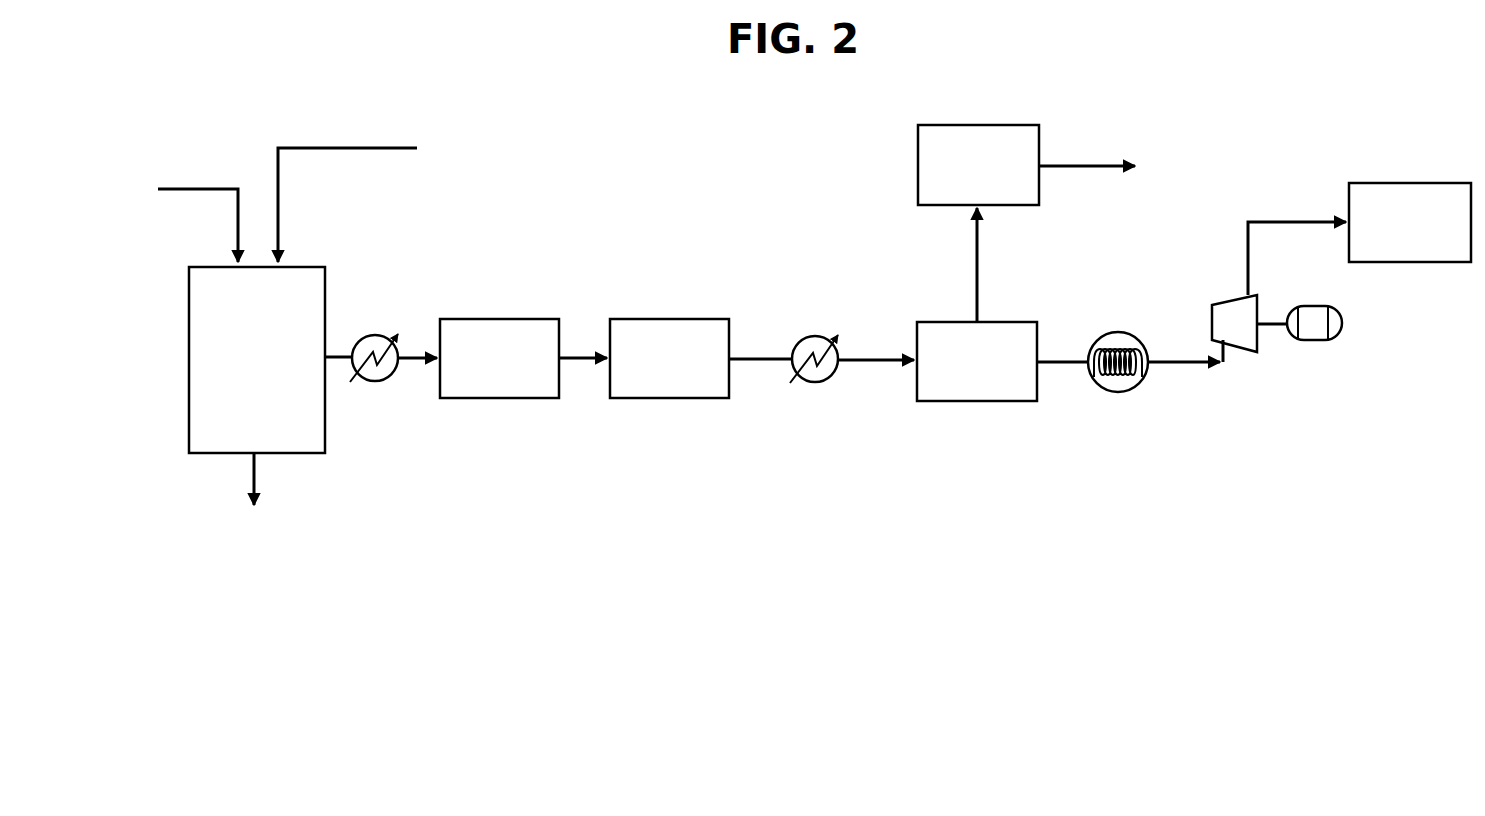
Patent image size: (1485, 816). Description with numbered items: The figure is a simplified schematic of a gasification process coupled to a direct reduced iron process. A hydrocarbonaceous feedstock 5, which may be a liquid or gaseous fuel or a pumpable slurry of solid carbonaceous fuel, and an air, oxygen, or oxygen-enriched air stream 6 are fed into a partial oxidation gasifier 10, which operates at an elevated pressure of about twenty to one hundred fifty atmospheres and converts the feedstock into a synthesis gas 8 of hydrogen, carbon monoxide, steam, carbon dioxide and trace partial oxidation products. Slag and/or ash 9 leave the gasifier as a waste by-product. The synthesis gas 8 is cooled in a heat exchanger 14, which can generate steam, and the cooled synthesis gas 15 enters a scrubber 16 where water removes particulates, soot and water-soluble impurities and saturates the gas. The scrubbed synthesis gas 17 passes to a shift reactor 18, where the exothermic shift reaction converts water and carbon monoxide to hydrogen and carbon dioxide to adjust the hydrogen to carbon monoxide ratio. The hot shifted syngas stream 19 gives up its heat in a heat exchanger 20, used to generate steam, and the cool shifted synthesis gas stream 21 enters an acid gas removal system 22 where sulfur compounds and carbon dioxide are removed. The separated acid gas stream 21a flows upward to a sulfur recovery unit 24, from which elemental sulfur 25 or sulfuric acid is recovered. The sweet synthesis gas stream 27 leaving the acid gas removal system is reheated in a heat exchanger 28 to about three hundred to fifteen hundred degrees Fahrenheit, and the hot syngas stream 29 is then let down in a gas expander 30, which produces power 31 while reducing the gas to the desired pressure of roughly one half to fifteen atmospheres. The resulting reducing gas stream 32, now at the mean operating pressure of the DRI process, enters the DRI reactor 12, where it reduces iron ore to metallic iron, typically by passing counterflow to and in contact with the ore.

The hydrocarbonaceous feedstock 5 is at (190, 188).
The oxygen-enriched air stream 6 is at (341, 148).
The synthesis gas 8 is at (335, 348).
The slag and/or ash 9 is at (256, 470).
The partial oxidation gasifier 10 is at (188, 343).
The DRI reactor 12 is at (1413, 257).
The heat exchanger 14 is at (368, 384).
The cooled synthesis gas 15 is at (417, 362).
The scrubber 16 is at (525, 327).
The scrubbed synthesis gas 17 is at (577, 365).
The shift reactor 18 is at (678, 394).
The shifted syngas stream 19 is at (758, 363).
The heat exchanger 20 is at (830, 382).
The cool shifted synthesis gas stream 21 is at (875, 367).
The acid gas stream 21a is at (980, 265).
The acid gas removal system 22 is at (975, 396).
The sulfur recovery unit 24 is at (988, 132).
The elemental sulfur 25 is at (1107, 167).
The sweet synthesis gas stream 27 is at (1066, 364).
The heat exchanger 28 is at (1118, 333).
The hot syngas stream 29 is at (1180, 366).
The gas expander 30 is at (1243, 342).
The power 31 is at (1313, 342).
The reducing gas stream 32 is at (1285, 218).